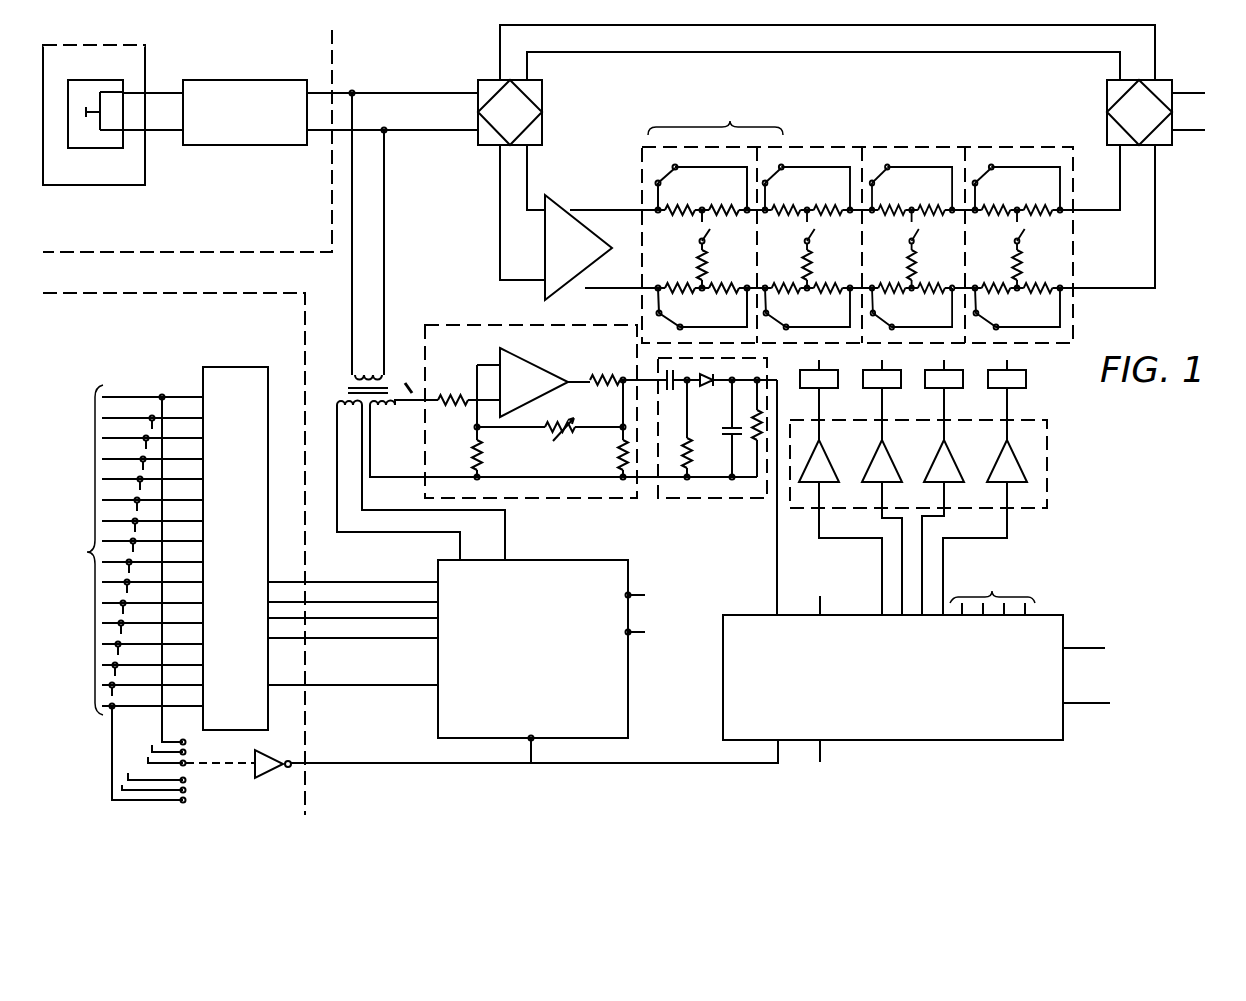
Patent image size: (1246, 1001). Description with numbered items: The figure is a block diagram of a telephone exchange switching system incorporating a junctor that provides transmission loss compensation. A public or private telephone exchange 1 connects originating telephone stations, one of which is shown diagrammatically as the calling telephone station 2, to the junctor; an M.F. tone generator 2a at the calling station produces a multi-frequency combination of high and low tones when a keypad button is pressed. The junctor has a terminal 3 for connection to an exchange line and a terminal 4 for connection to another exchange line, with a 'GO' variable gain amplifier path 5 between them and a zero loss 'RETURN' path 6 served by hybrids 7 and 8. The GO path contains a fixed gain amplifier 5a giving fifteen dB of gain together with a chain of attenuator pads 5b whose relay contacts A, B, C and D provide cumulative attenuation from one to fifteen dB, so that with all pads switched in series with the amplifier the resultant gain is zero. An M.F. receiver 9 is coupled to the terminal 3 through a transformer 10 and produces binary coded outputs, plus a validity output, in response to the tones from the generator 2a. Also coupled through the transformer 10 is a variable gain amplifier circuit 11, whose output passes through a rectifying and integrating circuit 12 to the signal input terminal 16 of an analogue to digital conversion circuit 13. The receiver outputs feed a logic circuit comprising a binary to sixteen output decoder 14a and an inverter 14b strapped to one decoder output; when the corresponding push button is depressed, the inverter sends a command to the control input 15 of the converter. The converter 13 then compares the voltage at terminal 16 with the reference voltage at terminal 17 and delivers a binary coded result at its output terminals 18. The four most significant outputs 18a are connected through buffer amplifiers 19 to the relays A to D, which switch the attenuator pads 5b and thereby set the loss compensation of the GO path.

The telephone exchange 1 is at (245, 112).
The telephone station 2 is at (116, 132).
The M.F. tone generator 2a is at (97, 148).
The terminal 3 is at (398, 97).
The terminal 4 is at (1186, 92).
The variable gain amplifier path 5 is at (857, 218).
The fixed gain amplifier 5a is at (582, 185).
The attenuator pads 5b is at (715, 120).
The zero loss 'RETURN' path 6 is at (850, 28).
The hybrid 7 is at (543, 105).
The hybrid 8 is at (1107, 102).
The M.F. receiver 9 is at (556, 560).
The transformer 10 is at (385, 378).
The variable gain amplifier circuit 11 is at (455, 323).
The rectifying and integrating circuit 12 is at (718, 498).
The analogue to digital conversion circuit 13 is at (926, 669).
The binary to sixteen output decoder 14a is at (237, 367).
The inverter 14b is at (270, 756).
The control input 15 is at (391, 760).
The input terminal 16 is at (775, 566).
The reference voltage terminal 17 is at (823, 609).
The output terminals 18 is at (1035, 592).
The most significant outputs 18a is at (928, 572).
The buffer amplifiers 19 is at (1047, 455).